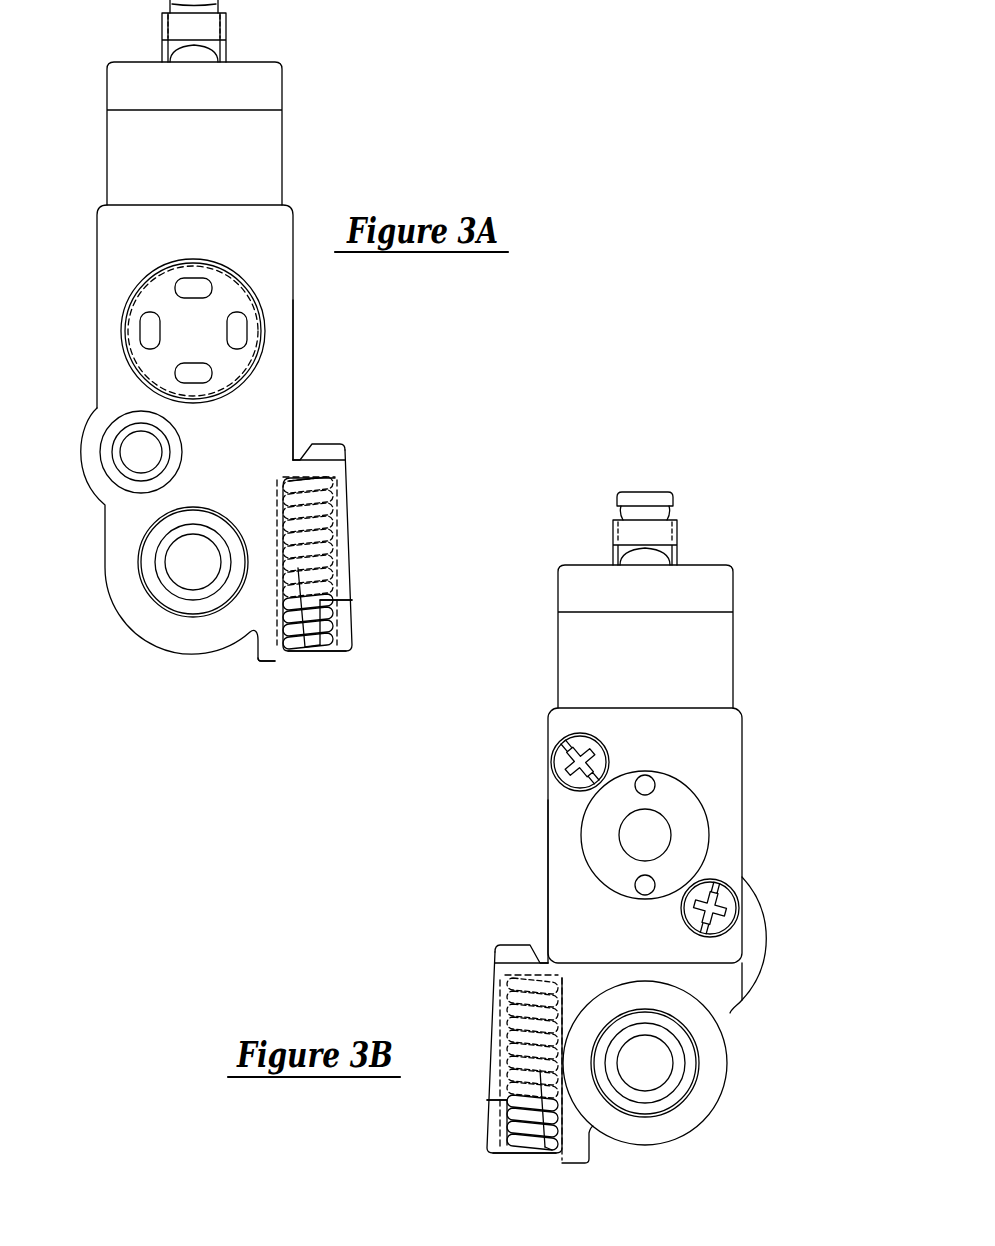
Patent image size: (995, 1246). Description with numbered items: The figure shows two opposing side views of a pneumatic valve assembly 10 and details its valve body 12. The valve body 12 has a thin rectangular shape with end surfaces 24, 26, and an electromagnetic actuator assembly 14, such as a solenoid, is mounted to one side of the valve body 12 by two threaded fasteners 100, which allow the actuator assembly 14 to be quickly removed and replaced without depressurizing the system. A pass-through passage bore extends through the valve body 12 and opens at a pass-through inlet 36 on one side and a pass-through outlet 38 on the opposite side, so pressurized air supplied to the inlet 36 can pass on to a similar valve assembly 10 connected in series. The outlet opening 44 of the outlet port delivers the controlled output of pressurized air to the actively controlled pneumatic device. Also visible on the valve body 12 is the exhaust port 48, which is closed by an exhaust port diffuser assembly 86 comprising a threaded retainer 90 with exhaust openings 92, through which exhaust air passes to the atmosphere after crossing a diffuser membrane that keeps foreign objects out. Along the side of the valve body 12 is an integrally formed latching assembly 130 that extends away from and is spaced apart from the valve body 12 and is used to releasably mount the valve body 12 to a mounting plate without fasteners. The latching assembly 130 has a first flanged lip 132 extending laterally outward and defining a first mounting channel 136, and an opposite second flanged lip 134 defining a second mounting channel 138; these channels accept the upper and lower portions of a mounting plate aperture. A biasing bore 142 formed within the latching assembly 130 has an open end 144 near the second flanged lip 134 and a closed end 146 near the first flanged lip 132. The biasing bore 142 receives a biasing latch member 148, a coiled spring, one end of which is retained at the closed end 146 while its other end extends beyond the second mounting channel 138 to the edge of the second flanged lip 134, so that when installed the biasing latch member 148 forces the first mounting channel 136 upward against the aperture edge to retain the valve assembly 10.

In FIG. 3A, the valve assembly 10 is at (300, 163).
In FIG. 3B, the valve assembly 10 is at (745, 645).
In FIG. 3A, the valve body 12 is at (292, 318).
In FIG. 3B, the actuator assembly 14 is at (742, 757).
In FIG. 3A, the end surface 24 is at (97, 250).
In FIG. 3B, the end surface 24 is at (762, 975).
In FIG. 3A, the end surface 26 is at (292, 348).
In FIG. 3B, the end surface 26 is at (548, 838).
In FIG. 3A, the pass-through inlet 36 is at (160, 565).
In FIG. 3B, the pass-through outlet 38 is at (680, 1060).
In FIG. 3A, the outlet opening 44 is at (115, 452).
In FIG. 3A, the exhaust port 48 is at (128, 292).
In FIG. 3A, the exhaust port diffuser assembly 86 is at (108, 320).
In FIG. 3A, the retainer 90 is at (152, 365).
In FIG. 3A, the exhaust openings 92 is at (150, 333).
In FIG. 3B, the threaded fasteners 100 is at (556, 762).
In FIG. 3A, the latching assembly 130 is at (349, 520).
In FIG. 3B, the latching assembly 130 is at (492, 990).
In FIG. 3A, the first flanged lip 132 is at (340, 447).
In FIG. 3B, the first flanged lip 132 is at (505, 948).
In FIG. 3A, the second flanged lip 134 is at (265, 662).
In FIG. 3B, the second flanged lip 134 is at (578, 1168).
In FIG. 3A, the first mounting channel 136 is at (308, 460).
In FIG. 3B, the first mounting channel 136 is at (535, 960).
In FIG. 3A, the second mounting channel 138 is at (315, 655).
In FIG. 3B, the second mounting channel 138 is at (535, 1160).
In FIG. 3A, the biasing bore 142 is at (340, 580).
In FIG. 3B, the biasing bore 142 is at (497, 1100).
In FIG. 3A, the open end 144 is at (333, 652).
In FIG. 3B, the open end 144 is at (510, 1153).
In FIG. 3A, the closed end 146 is at (300, 477).
In FIG. 3A, the biasing latch member 148 is at (325, 548).
In FIG. 3B, the biasing latch member 148 is at (515, 1035).